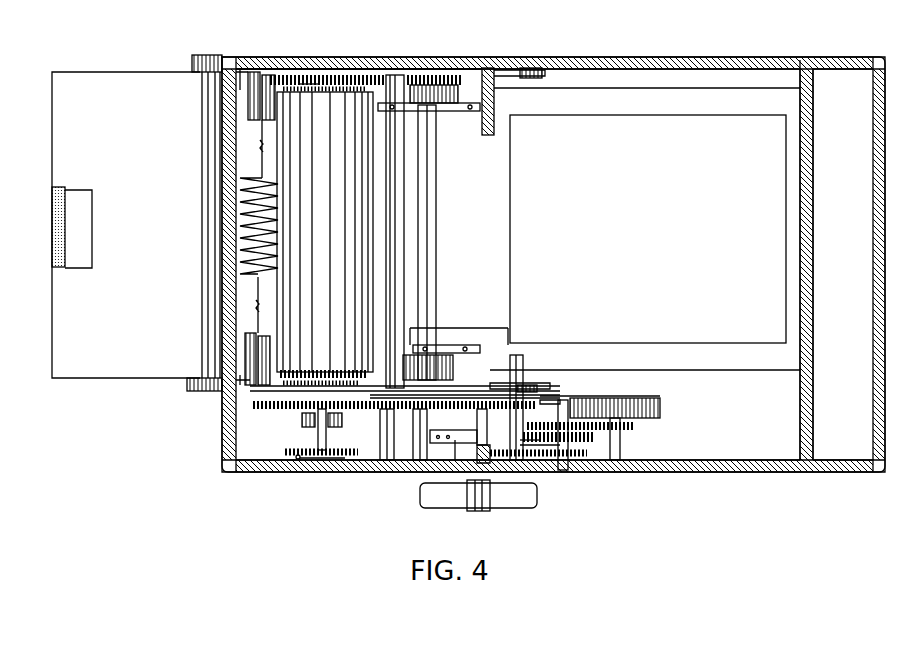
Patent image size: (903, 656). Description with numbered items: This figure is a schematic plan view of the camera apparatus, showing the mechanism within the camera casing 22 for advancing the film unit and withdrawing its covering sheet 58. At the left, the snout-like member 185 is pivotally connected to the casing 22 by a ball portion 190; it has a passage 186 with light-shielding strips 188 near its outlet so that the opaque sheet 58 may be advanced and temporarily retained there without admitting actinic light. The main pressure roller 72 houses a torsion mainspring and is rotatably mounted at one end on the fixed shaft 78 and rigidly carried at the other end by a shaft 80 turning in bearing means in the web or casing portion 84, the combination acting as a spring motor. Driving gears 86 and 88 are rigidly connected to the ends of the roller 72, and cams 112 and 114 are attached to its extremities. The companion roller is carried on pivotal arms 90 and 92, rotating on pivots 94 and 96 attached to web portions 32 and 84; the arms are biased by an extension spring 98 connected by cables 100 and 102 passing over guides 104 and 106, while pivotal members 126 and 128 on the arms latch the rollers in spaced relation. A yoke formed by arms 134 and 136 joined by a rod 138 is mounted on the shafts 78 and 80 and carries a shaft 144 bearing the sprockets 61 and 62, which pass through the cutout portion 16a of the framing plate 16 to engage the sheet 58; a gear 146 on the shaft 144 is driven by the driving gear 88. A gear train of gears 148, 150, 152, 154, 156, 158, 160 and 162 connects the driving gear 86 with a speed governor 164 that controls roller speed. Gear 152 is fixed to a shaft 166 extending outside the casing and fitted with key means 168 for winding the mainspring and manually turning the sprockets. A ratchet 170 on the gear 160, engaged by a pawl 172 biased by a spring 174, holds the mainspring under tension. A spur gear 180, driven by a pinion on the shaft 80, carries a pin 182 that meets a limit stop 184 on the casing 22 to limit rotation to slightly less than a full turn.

The camera casing 22 is at (698, 62).
The snout-like member 185 is at (137, 235).
The ball portion 190 is at (210, 250).
The light-shielding strips 188 is at (60, 213).
The passage 186 is at (78, 205).
The pressure roller 72 is at (333, 200).
The fixed shaft 78 is at (323, 75).
The driving gear 88 is at (350, 76).
The cam 114 is at (312, 88).
The cam 112 is at (300, 378).
The yoke arm 134 is at (357, 385).
The yoke arm 136 is at (372, 73).
The rod 138 is at (395, 175).
The shaft 144 is at (430, 205).
The gear 146 is at (428, 76).
The sprocket 62 is at (455, 112).
The web or casing portion 84 is at (437, 62).
The pivotal arm 92 is at (478, 70).
The pivot 96 is at (522, 68).
The pivotal member 128 is at (242, 68).
The guide 106 is at (250, 95).
The cable 102 is at (260, 130).
The extension spring 98 is at (240, 182).
The cable 100 is at (255, 325).
The guide 104 is at (250, 355).
The pivotal member 126 is at (240, 380).
The driving gear 86 is at (255, 405).
The cutout portion 16a is at (478, 345).
The sprocket 61 is at (450, 345).
The sheet 58 is at (652, 232).
The framing plate 16 is at (772, 352).
The web portion 32 is at (585, 372).
The shaft 80 is at (318, 433).
The spur gear 180 is at (340, 446).
The pin 182 is at (292, 458).
The limit stop 184 is at (320, 458).
The gear 148 is at (385, 420).
The gear 150 is at (405, 420).
The shaft 166 is at (477, 423).
The spring 174 is at (455, 440).
The key means 168 is at (450, 500).
The pivotal arm 90 is at (470, 405).
The pivot 94 is at (552, 355).
The gear 152 is at (490, 385).
The gear 154 is at (545, 400).
The gear 160 is at (548, 420).
The speed governor 164 is at (660, 408).
The gear 162 is at (633, 427).
The ratchet 170 is at (585, 455).
The pawl 172 is at (532, 440).
The gear 158 is at (592, 460).
The gear 156 is at (528, 445).